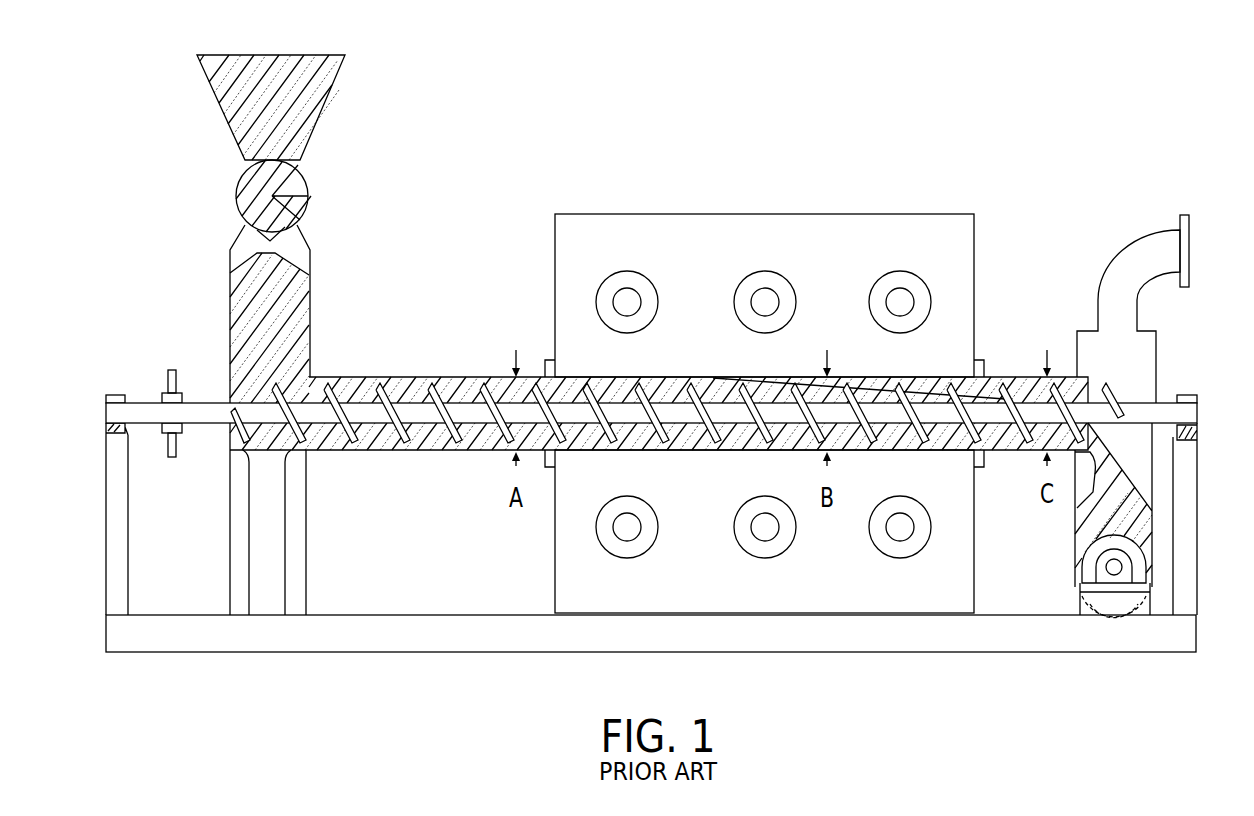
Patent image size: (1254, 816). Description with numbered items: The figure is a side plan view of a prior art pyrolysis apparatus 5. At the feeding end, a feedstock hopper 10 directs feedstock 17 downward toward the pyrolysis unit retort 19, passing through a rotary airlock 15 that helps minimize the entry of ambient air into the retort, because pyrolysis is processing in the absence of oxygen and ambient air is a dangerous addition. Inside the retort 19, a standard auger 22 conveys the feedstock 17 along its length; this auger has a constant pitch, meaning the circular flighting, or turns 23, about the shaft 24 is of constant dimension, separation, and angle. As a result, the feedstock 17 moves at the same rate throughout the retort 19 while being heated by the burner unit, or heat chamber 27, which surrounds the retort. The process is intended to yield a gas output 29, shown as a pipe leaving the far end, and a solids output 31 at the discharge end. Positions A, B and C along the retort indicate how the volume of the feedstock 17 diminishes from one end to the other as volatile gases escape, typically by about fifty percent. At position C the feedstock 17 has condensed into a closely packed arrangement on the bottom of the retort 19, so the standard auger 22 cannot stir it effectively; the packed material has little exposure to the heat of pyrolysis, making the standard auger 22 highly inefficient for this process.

The pyrolysis apparatus 5 is at (190, 655).
The feedstock hopper 10 is at (333, 87).
The rotary airlock 15 is at (308, 185).
The feedstock 17 is at (300, 300).
The pyrolysis unit retort 19 is at (433, 375).
The standard auger 22 is at (457, 440).
The turns 23 is at (356, 430).
The shaft 24 is at (1028, 410).
The heat chamber 27 is at (813, 259).
The gas output 29 is at (1190, 250).
The solids output 31 is at (1117, 568).